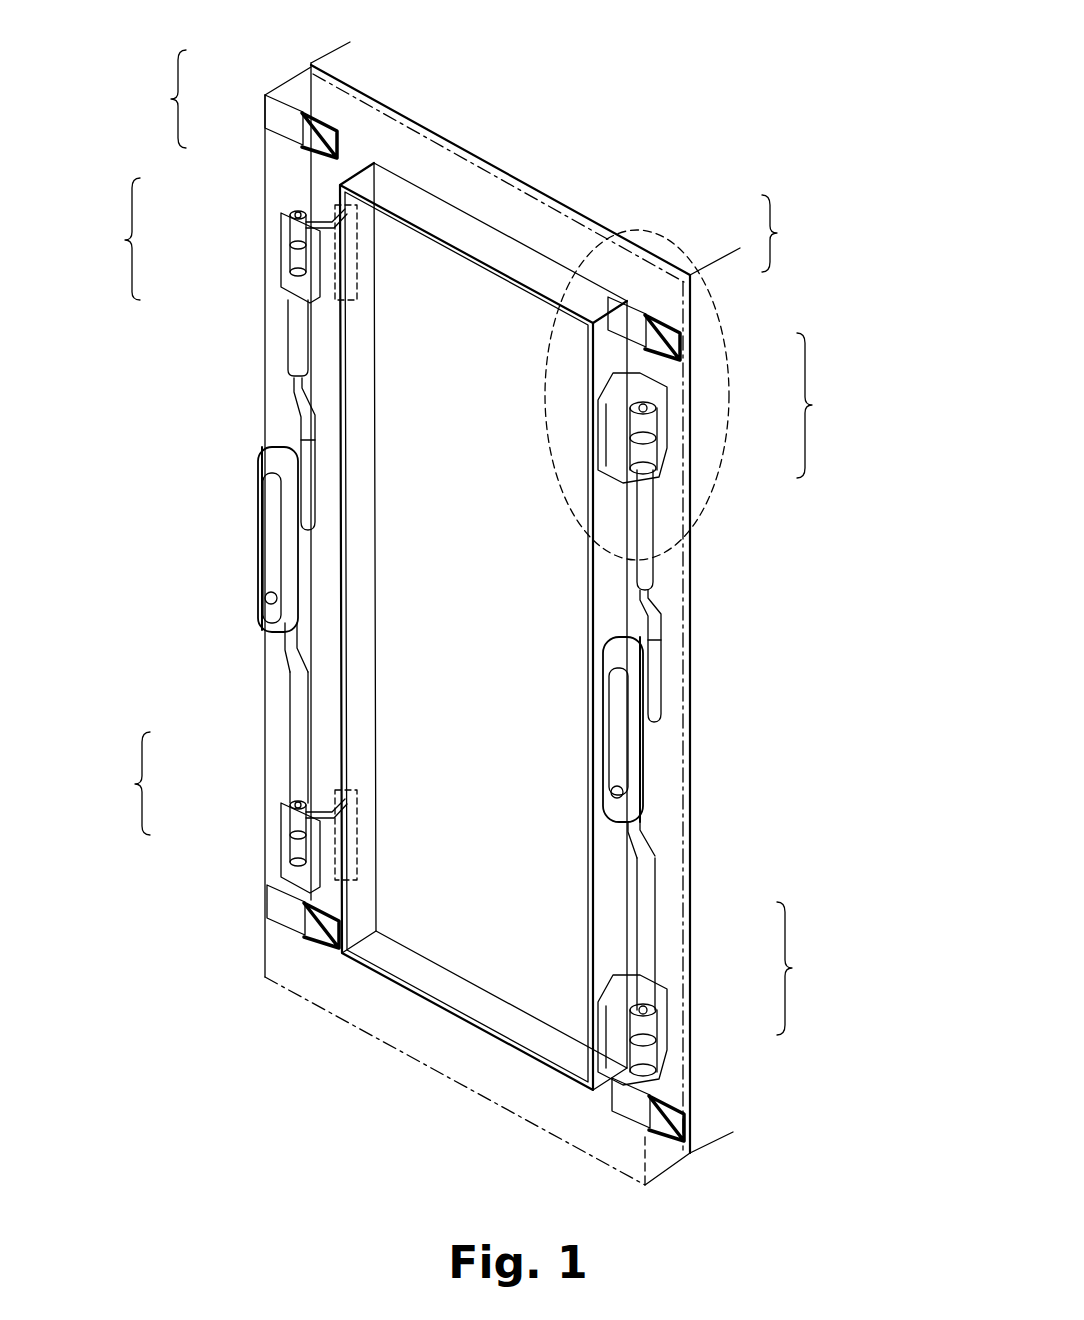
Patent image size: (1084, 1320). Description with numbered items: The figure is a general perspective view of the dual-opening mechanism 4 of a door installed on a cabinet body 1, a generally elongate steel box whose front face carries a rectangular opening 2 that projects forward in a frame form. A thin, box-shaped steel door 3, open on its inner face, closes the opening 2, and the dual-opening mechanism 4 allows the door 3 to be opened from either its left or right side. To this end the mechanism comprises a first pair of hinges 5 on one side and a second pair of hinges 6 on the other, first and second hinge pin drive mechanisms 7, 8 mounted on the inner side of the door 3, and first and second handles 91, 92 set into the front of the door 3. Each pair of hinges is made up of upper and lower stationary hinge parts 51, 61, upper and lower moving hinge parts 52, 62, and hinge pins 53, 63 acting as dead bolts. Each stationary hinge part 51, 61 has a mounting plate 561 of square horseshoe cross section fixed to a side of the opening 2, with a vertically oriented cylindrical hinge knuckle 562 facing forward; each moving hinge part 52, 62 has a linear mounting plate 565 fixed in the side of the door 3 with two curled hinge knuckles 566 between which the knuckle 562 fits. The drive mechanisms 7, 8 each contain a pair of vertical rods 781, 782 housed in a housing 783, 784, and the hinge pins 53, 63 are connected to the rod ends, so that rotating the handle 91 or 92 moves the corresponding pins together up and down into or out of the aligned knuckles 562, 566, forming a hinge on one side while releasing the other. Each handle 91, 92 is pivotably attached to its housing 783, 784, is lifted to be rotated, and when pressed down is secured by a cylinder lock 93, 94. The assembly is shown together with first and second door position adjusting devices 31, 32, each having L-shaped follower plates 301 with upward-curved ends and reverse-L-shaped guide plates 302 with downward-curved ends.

The cabinet body 1 is at (480, 116).
The opening 2 is at (461, 592).
The door 3 is at (386, 132).
The dual-opening mechanism of a door 4 is at (245, 355).
The first pair of hinges 5 is at (126, 506).
The second pair of hinges 6 is at (688, 632).
The first hinge pin drive mechanism 7 is at (280, 432).
The second hinge pin drive mechanism 8 is at (667, 649).
The first door position adjusting device 31 is at (159, 99).
The second door position adjusting device 32 is at (787, 233).
The follower plate 301 is at (286, 103).
The guide plate 302 is at (300, 140).
The stationary hinge part 51 is at (322, 208).
The moving hinge part 52 is at (294, 270).
The hinge pin 53 is at (286, 304).
The stationary hinge part 61 is at (670, 398).
The moving hinge part 62 is at (664, 461).
The hinge pin 63 is at (662, 500).
The mounting plate 561 is at (322, 236).
The hinge knuckle 562 is at (300, 262).
The mounting plate 565 is at (320, 295).
The hinge knuckle 566 is at (290, 218).
The vertical rod 781 is at (294, 420).
The vertical rod 782 is at (660, 613).
The housing 783 is at (266, 520).
The housing 784 is at (640, 745).
The first handle 91 is at (270, 545).
The second handle 92 is at (618, 710).
The cylinder lock 93 is at (265, 598).
The cylinder lock 94 is at (623, 793).